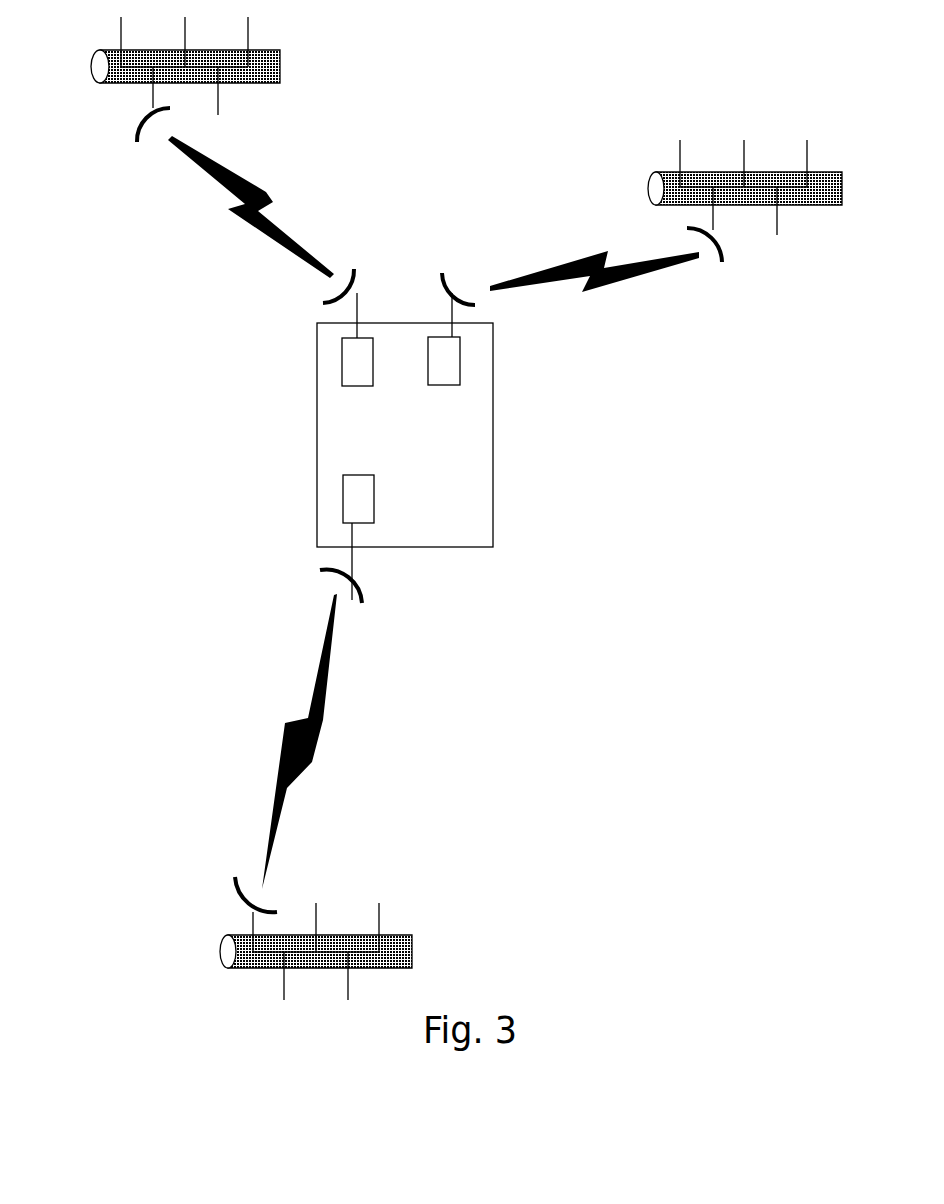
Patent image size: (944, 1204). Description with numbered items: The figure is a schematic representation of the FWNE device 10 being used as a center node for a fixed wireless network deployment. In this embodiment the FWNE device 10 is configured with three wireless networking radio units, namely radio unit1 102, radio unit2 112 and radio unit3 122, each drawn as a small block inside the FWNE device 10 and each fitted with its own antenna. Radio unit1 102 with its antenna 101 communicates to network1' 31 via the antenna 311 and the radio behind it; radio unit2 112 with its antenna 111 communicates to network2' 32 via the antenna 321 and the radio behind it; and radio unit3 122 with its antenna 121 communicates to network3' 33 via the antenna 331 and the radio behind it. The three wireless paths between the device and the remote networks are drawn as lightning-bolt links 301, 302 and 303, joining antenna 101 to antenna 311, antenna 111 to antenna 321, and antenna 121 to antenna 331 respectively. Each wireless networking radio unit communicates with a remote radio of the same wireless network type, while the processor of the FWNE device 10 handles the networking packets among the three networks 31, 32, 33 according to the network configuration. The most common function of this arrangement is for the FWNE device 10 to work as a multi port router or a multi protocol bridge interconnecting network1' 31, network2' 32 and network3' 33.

The FWNE device 10 is at (505, 498).
The antenna 101 is at (332, 300).
The radio unit1 102 is at (342, 378).
The antenna 111 is at (450, 288).
The radio unit2 112 is at (460, 361).
The antenna 121 is at (330, 573).
The radio unit3 122 is at (343, 499).
The network1' 31 is at (267, 82).
The antenna 311 is at (137, 128).
The first wireless link 301 is at (260, 194).
The network2' 32 is at (655, 188).
The antenna 321 is at (723, 253).
The second wireless link 302 is at (570, 262).
The network3' 33 is at (390, 933).
The antenna 331 is at (238, 897).
The third wireless link 303 is at (315, 727).